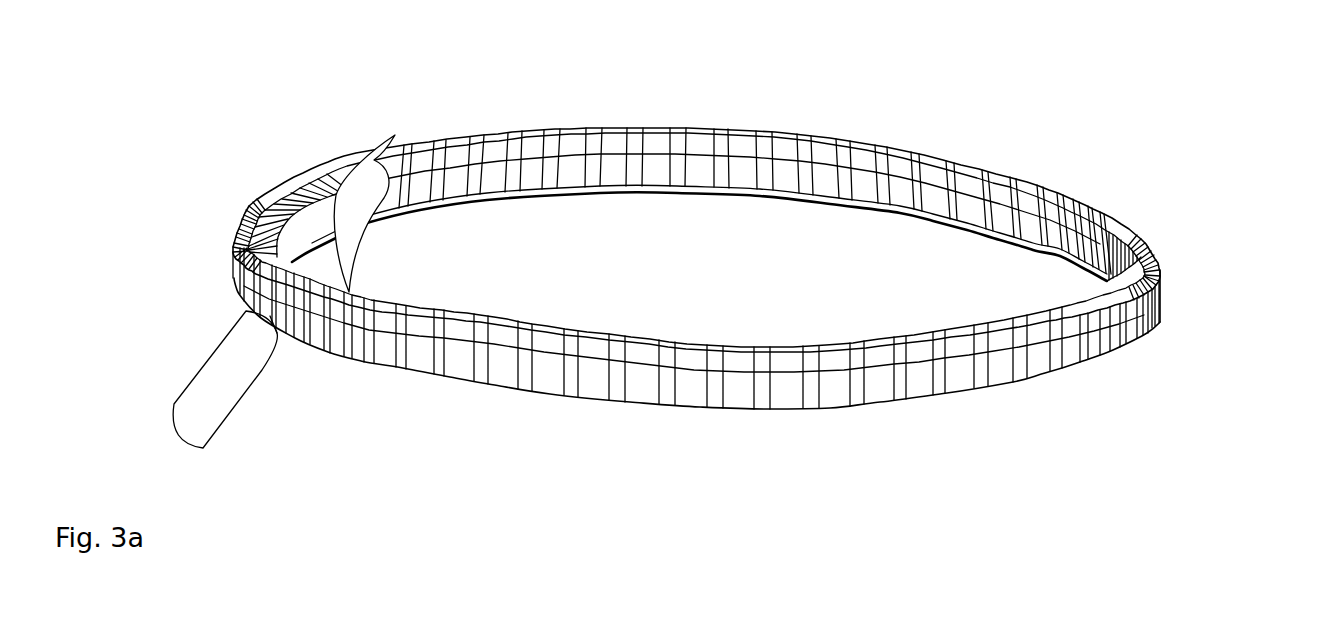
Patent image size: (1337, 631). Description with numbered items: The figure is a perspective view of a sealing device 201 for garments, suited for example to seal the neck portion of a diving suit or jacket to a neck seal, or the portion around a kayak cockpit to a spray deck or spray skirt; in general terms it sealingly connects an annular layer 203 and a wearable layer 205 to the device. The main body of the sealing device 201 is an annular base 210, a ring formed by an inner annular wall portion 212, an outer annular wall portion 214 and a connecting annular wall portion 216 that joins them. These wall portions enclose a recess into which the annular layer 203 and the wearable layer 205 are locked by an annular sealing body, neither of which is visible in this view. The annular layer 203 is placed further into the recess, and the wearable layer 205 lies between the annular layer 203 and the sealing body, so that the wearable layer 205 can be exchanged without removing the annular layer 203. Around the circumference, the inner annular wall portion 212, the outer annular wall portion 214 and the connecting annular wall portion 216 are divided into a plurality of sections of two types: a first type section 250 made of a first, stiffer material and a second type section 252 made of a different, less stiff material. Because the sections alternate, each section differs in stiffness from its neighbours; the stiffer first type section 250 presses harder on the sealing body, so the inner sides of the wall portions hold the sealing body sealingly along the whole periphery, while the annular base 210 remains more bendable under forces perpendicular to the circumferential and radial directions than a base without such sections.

The sealing device 201 is at (779, 220).
The annular layer 203 is at (202, 378).
The wearable layer 205 is at (355, 190).
The annular base 210 is at (1218, 296).
The inner annular wall portion 212 is at (905, 196).
The outer annular wall portion 214 is at (1160, 321).
The connecting annular wall portion 216 is at (888, 152).
The first type section 250 is at (676, 100).
The second type section 252 is at (700, 100).